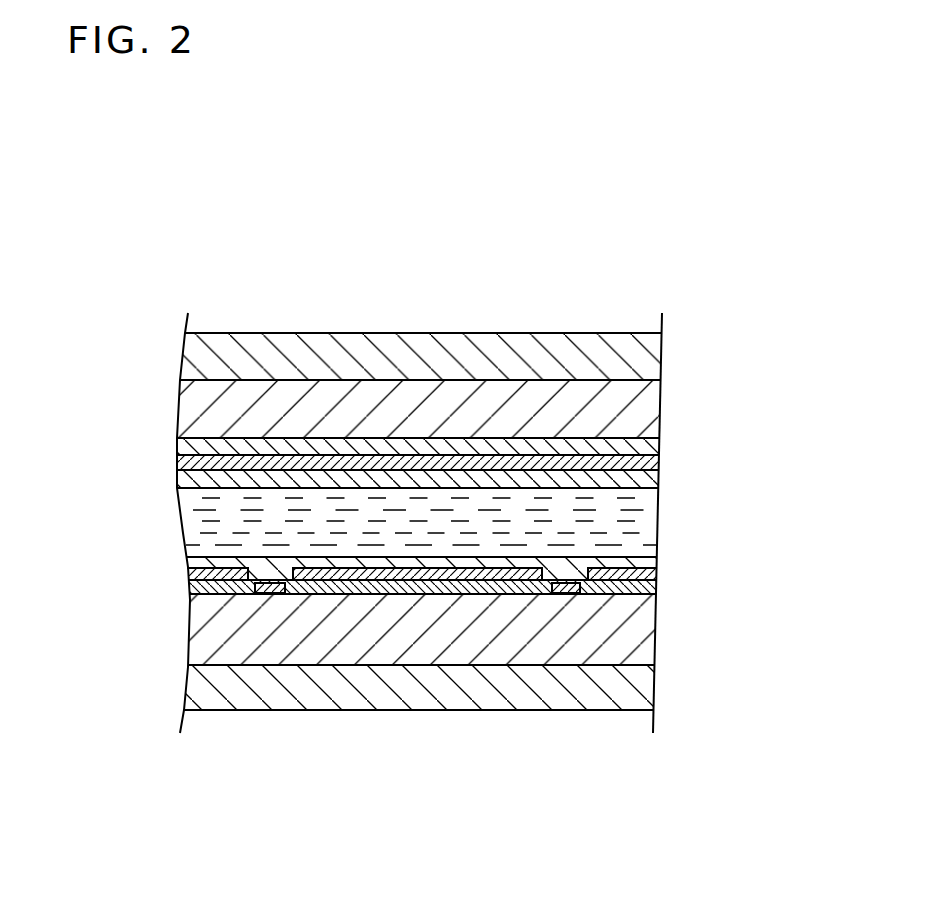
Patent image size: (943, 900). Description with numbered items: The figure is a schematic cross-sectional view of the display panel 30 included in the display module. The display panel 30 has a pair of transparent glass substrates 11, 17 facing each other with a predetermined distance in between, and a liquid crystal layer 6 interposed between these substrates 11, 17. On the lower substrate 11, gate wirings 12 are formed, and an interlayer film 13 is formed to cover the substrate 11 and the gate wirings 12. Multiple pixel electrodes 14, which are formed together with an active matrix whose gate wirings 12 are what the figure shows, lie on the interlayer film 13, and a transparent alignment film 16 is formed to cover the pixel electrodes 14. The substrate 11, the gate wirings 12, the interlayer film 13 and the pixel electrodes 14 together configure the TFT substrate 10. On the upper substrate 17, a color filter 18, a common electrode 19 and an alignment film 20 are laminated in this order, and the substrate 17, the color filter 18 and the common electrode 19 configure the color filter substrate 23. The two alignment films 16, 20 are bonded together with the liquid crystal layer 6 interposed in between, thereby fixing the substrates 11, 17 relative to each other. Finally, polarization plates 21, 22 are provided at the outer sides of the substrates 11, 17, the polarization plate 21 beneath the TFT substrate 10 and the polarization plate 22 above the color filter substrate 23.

The display panel 30 is at (172, 223).
The polarization plate 22 is at (637, 352).
The color filter substrate 23 is at (510, 374).
The substrate 17 is at (618, 403).
The common electrode 19 is at (637, 463).
The color filter 18 is at (273, 445).
The alignment film 20 is at (638, 478).
The liquid crystal layer 6 is at (637, 517).
The TFT substrate 10 is at (469, 650).
The alignment film 16 is at (650, 562).
The pixel electrode 14 is at (648, 577).
The interlayer film 13 is at (473, 590).
The gate wiring 12 is at (277, 587).
The substrate 11 is at (473, 629).
The polarization plate 21 is at (652, 680).